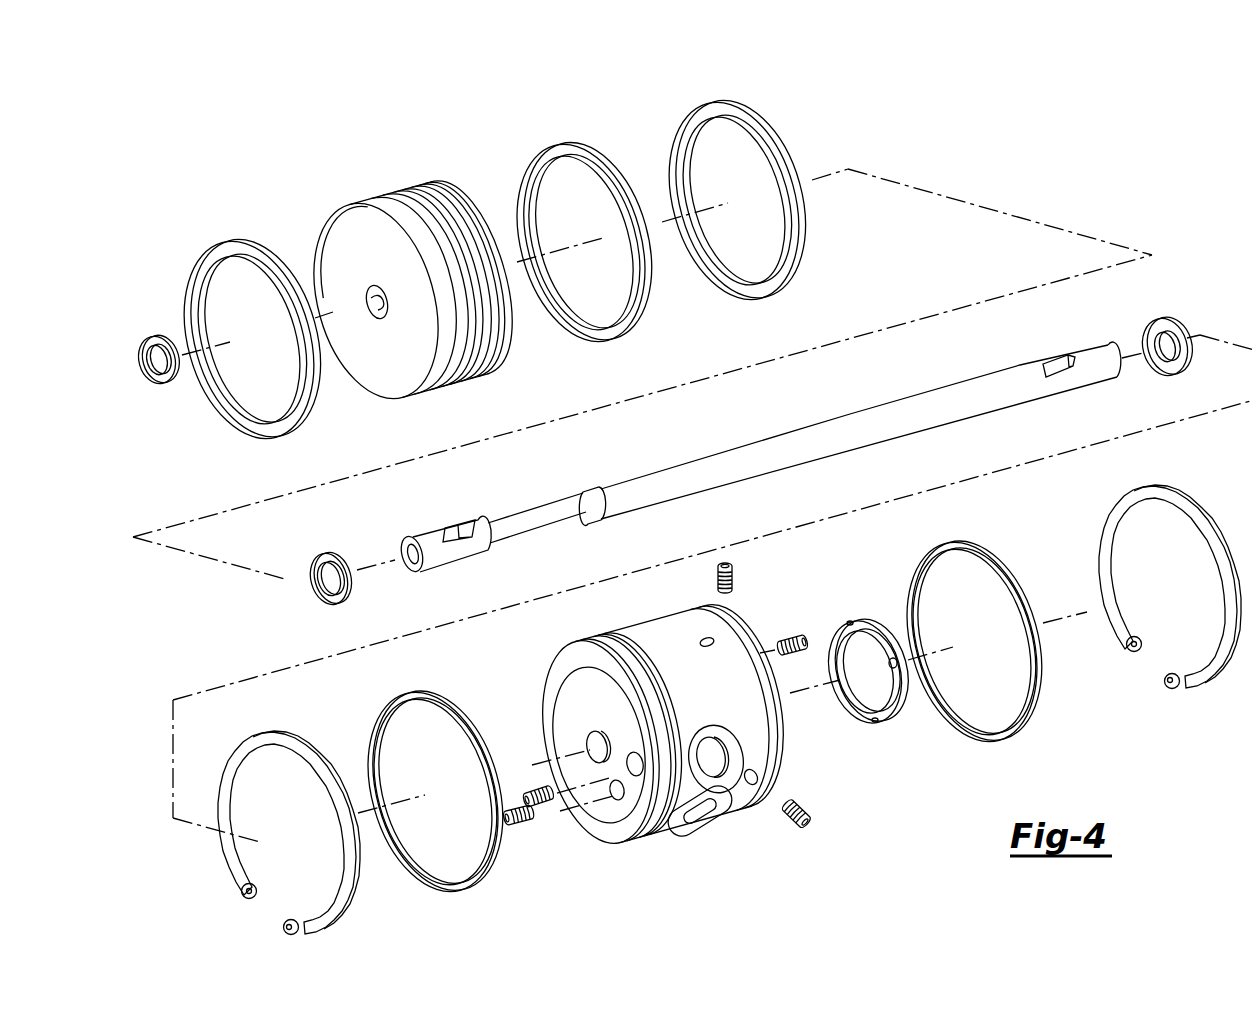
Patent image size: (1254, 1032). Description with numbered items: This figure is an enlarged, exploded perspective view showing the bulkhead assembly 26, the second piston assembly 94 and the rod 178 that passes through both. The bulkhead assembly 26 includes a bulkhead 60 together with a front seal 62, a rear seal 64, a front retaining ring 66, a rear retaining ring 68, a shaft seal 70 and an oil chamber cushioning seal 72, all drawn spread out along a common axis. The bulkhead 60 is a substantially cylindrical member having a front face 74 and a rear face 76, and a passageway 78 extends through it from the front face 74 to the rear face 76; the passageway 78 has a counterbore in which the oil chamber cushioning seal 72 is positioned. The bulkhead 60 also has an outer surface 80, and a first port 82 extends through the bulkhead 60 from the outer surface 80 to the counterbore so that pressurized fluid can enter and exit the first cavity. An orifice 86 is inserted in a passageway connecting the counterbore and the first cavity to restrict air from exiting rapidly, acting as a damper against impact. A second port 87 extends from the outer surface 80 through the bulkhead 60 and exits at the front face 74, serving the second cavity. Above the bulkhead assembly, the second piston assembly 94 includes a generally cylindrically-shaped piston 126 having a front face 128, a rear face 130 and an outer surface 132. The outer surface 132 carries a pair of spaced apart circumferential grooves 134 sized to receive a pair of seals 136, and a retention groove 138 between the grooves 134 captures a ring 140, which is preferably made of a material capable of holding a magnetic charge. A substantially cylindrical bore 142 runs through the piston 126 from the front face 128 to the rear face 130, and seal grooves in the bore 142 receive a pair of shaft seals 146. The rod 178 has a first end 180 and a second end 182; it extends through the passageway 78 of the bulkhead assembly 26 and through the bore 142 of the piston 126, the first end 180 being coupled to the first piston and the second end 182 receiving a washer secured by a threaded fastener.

The bulkhead assembly 26 is at (662, 740).
The bulkhead 60 is at (662, 731).
The front seal 62 is at (405, 698).
The rear seal 64 is at (977, 552).
The front retaining ring 66 is at (278, 733).
The rear retaining ring 68 is at (1183, 500).
The shaft seal 70 is at (1160, 322).
The oil chamber cushioning seal 72 is at (863, 622).
The front face 74 is at (570, 687).
The rear face 76 is at (743, 637).
The passageway 78 is at (588, 745).
The outer surface 80 is at (660, 635).
The first port 82 is at (700, 812).
The orifice 86 is at (795, 635).
The second port 87 is at (720, 762).
The second piston assembly 94 is at (396, 263).
The piston 126 is at (346, 195).
The front face 128 is at (340, 230).
The rear face 130 is at (463, 207).
The outer surface 132 is at (420, 187).
The circumferential grooves 134 is at (440, 388).
The seals 136 is at (246, 242).
The retention groove 138 is at (472, 345).
The ring 140 is at (557, 150).
The bore 142 is at (385, 305).
The shaft seals 146 is at (160, 335).
The rod 178 is at (814, 442).
The first end 180 is at (1118, 385).
The second end 182 is at (416, 580).